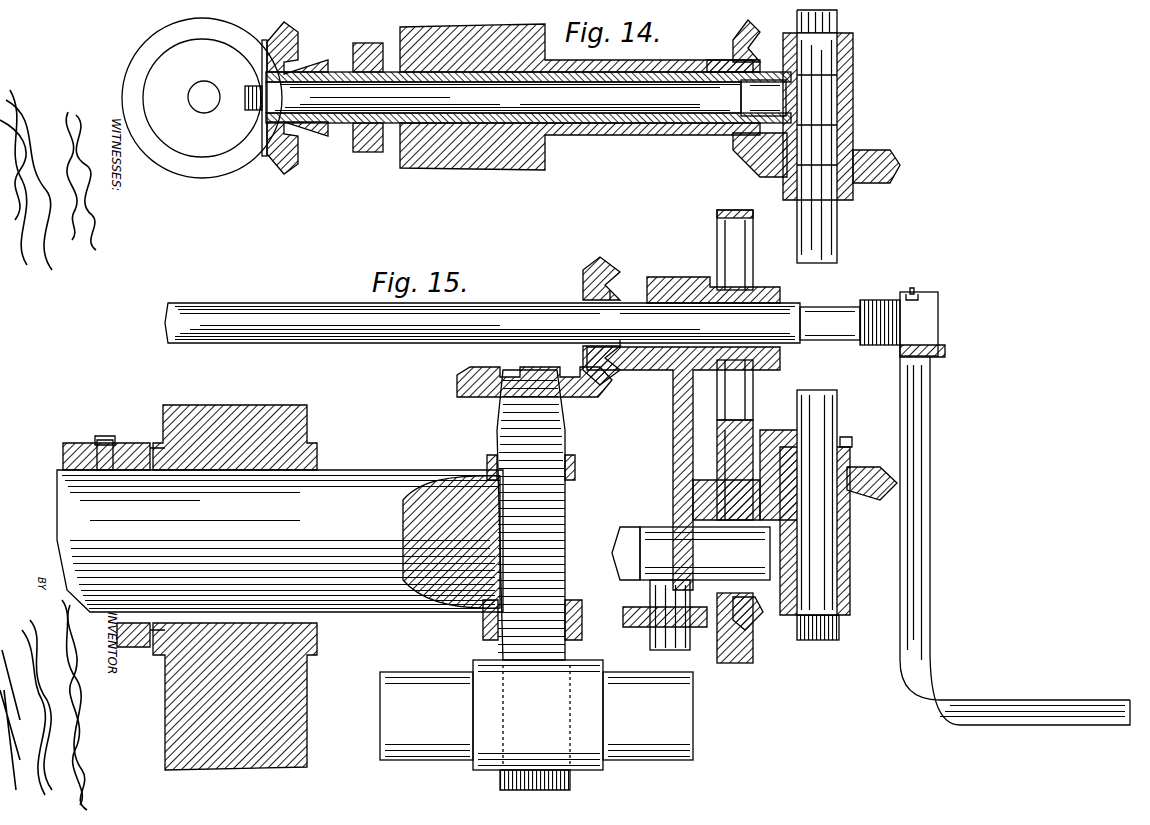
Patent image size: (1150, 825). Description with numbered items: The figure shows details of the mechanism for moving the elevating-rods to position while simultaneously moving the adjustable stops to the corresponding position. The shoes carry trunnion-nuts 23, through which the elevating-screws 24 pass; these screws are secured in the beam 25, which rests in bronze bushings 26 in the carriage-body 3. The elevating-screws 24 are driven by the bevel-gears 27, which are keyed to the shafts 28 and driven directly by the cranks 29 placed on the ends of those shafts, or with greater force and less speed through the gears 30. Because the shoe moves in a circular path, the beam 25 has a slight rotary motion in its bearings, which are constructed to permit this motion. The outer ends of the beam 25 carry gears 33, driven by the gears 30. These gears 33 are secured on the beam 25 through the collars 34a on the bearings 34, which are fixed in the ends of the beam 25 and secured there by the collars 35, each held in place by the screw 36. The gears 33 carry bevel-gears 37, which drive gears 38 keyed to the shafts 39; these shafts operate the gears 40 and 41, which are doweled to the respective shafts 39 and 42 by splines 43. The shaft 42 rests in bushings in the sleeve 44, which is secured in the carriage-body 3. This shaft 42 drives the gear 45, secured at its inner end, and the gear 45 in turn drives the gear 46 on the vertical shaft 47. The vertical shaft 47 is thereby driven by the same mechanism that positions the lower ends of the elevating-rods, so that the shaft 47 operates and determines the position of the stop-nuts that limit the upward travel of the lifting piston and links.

In FIG. 14, the carriage-body 3 is at (462, 170).
In FIG. 15, the carriage-body 3 is at (308, 702).
In FIG. 15, the trunnion-nut 23 is at (696, 709).
In FIG. 15, the elevating-screw 24 is at (570, 780).
In FIG. 15, the beam 25 is at (365, 470).
In FIG. 15, the bronze bushing 26 is at (318, 630).
In FIG. 15, the bevel-gear 27 is at (600, 270).
In FIG. 15, the shaft 28 is at (510, 310).
In FIG. 15, the crank 29 is at (932, 492).
In FIG. 15, the gear 30 is at (755, 258).
In FIG. 15, the gear 33 is at (755, 460).
In FIG. 15, the bearing 34 is at (852, 552).
In FIG. 15, the collar 34a is at (762, 618).
In FIG. 15, the collar 35 is at (640, 627).
In FIG. 15, the screw 36 is at (670, 650).
In FIG. 15, the bevel-gear 37 is at (760, 640).
In FIG. 15, the gear 38 is at (872, 495).
In FIG. 15, the shaft 39 is at (835, 408).
In FIG. 14, the gear 40 is at (894, 160).
In FIG. 14, the gear 41 is at (758, 32).
In FIG. 14, the shaft 42 is at (585, 128).
In FIG. 14, the spline 43 is at (710, 62).
In FIG. 14, the sleeve 44 is at (640, 65).
In FIG. 14, the gear 45 is at (270, 172).
In FIG. 14, the gear 46 is at (210, 178).
In FIG. 14, the vertical shaft 47 is at (205, 80).